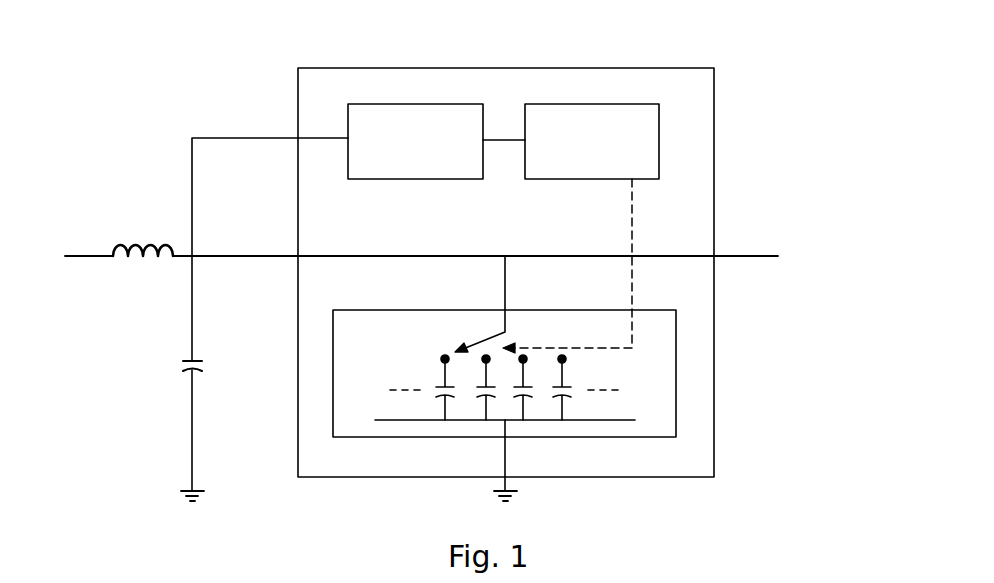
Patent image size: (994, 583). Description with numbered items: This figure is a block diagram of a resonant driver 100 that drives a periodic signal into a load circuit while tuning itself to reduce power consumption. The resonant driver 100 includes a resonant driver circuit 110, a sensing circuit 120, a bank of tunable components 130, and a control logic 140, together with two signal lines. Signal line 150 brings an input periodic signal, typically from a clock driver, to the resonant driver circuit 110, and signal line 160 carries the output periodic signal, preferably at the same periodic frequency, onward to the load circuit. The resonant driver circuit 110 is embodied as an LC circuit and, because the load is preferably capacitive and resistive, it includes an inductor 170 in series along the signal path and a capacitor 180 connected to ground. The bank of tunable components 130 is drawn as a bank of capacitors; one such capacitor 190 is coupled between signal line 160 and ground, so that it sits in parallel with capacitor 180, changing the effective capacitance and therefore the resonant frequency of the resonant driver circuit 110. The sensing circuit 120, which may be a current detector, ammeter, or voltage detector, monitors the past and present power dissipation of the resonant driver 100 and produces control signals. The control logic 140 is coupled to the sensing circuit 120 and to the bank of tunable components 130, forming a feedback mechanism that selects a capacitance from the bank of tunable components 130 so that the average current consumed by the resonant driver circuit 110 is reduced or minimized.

The resonant driver 100 is at (760, 62).
The resonant driver circuit 110 is at (125, 324).
The sensing circuit 120 is at (404, 104).
The bank of tunable components 130 is at (676, 383).
The control logic 140 is at (575, 104).
The signal line 150 is at (100, 256).
The signal line 160 is at (737, 256).
The inductor 170 is at (155, 246).
The capacitor 180 is at (182, 368).
The capacitor 190 is at (442, 397).